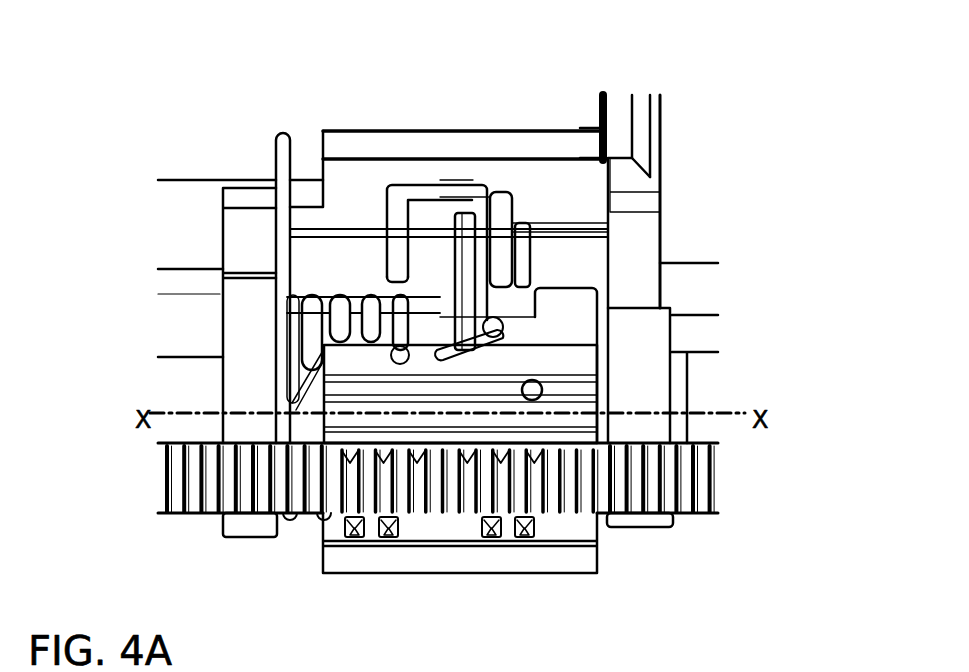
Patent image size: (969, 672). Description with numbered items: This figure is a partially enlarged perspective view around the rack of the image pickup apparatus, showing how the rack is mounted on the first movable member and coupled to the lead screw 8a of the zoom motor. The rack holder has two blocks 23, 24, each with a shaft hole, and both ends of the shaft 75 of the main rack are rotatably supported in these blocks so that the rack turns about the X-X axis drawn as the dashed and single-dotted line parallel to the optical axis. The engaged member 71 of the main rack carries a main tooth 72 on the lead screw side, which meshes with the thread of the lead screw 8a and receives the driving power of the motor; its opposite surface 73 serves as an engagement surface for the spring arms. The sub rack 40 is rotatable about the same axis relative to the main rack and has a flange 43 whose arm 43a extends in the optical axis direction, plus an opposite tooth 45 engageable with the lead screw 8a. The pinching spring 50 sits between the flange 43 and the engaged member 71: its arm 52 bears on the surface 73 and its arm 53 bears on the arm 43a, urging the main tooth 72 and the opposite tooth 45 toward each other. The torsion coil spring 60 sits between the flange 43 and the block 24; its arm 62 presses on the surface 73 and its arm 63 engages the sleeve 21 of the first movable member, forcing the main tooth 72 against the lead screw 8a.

The sleeve 21 is at (181, 213).
The block 23 is at (645, 343).
The block 24 is at (238, 373).
The sub rack 40 is at (395, 555).
The flange 43 is at (437, 217).
The arm 43a is at (503, 313).
The opposite tooth 45 is at (520, 540).
The pinching spring 50 is at (473, 323).
The arm 52 is at (505, 330).
The arm 53 is at (445, 190).
The torsion coil spring 60 is at (307, 297).
The arm 62 is at (400, 313).
The arm 63 is at (277, 137).
The engaged member 71 is at (372, 350).
The main tooth 72 is at (497, 455).
The surface 73 is at (563, 348).
The shaft 75 is at (356, 297).
The lead screw 8a is at (653, 490).